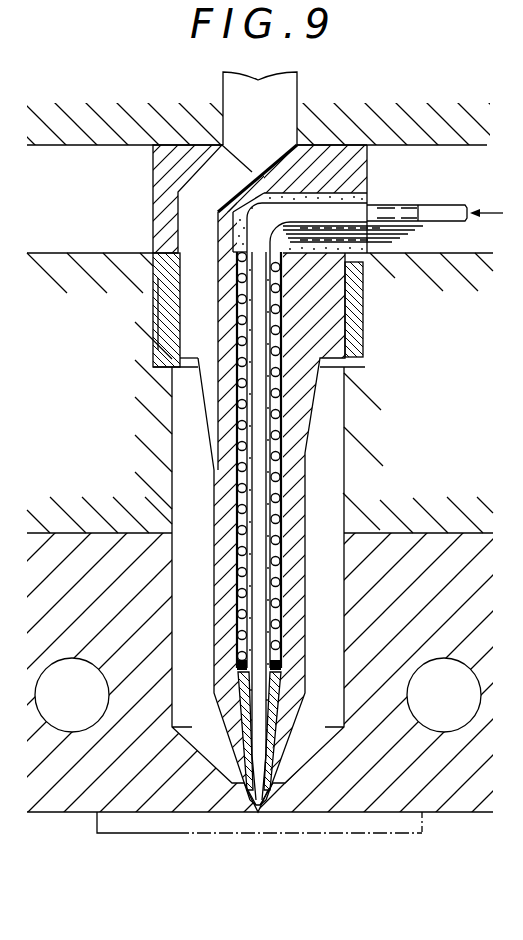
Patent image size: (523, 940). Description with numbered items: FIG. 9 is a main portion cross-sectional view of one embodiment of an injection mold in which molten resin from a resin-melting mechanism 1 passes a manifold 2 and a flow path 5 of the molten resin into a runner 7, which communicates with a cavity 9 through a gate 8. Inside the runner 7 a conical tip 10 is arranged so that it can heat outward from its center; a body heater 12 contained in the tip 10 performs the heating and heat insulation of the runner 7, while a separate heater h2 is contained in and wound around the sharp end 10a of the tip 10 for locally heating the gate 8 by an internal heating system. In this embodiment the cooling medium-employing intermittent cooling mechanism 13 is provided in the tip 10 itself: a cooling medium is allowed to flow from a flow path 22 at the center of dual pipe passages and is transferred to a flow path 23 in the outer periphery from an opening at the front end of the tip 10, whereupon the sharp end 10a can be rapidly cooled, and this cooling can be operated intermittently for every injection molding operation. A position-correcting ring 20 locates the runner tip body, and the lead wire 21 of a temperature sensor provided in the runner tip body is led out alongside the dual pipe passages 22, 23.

The resin-melting mechanism 1 is at (400, 128).
The manifold 2 is at (110, 128).
The flow path of the molten resin 5 is at (270, 106).
The runner 7 is at (193, 492).
The gate 8 is at (267, 805).
The cavity 9 is at (121, 836).
The tip 10 is at (213, 405).
The sharp end of the tip 10a is at (250, 810).
The heater 12 is at (283, 362).
The cooling medium-employing intermittent cooling mechanism 13 is at (237, 805).
The position-correcting ring 20 is at (155, 337).
The lead wire of a temperature sensor 21 is at (430, 246).
The flow path 22 is at (453, 207).
The flow path 23 is at (392, 205).
The heater h2 is at (272, 747).